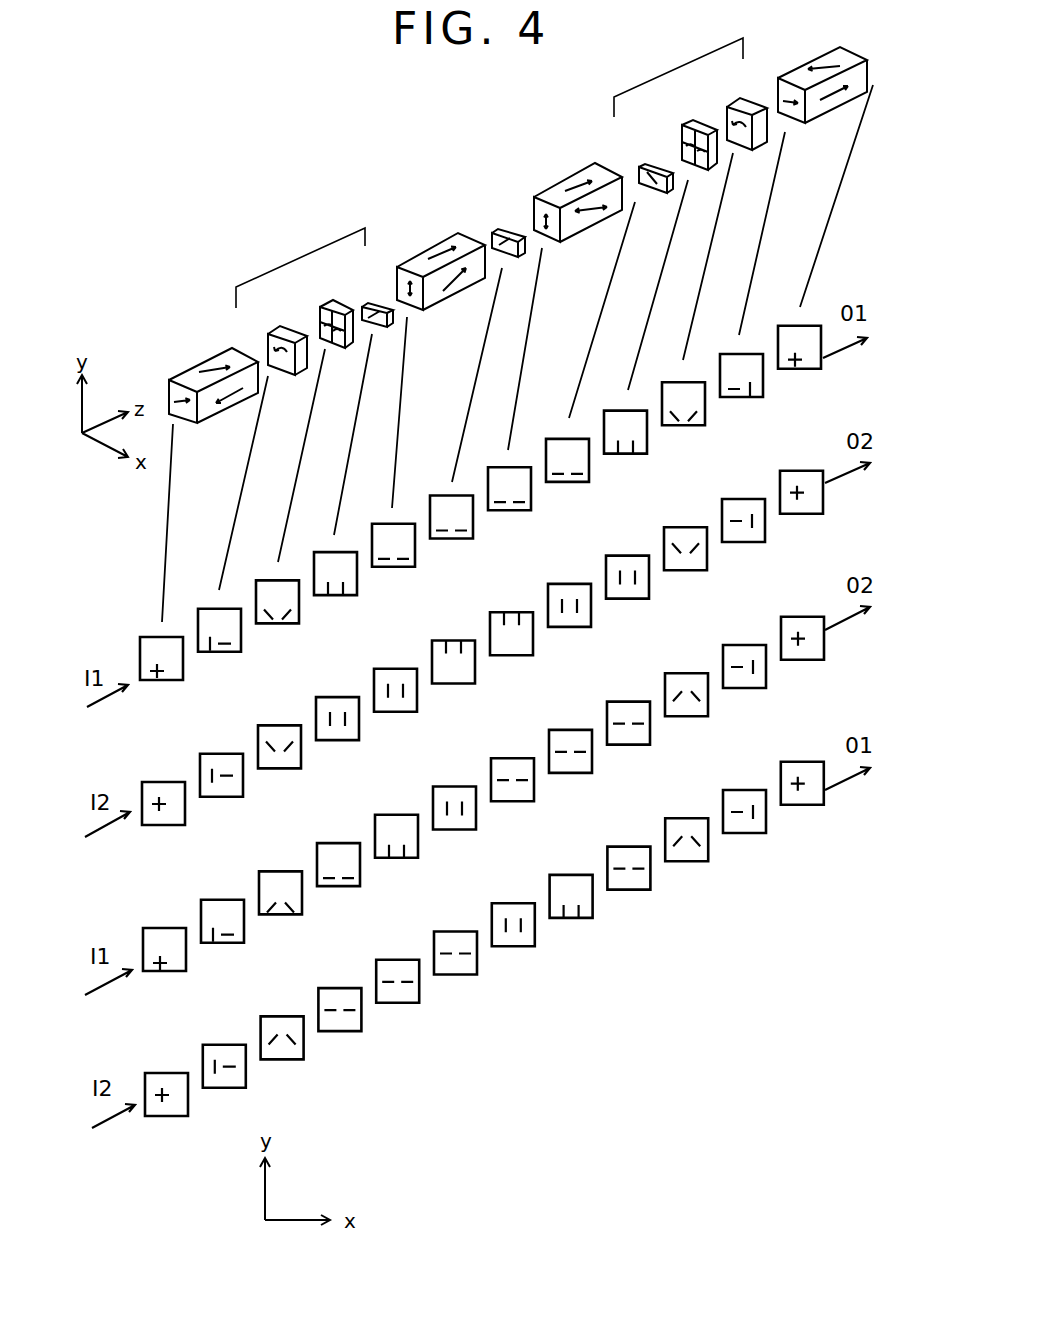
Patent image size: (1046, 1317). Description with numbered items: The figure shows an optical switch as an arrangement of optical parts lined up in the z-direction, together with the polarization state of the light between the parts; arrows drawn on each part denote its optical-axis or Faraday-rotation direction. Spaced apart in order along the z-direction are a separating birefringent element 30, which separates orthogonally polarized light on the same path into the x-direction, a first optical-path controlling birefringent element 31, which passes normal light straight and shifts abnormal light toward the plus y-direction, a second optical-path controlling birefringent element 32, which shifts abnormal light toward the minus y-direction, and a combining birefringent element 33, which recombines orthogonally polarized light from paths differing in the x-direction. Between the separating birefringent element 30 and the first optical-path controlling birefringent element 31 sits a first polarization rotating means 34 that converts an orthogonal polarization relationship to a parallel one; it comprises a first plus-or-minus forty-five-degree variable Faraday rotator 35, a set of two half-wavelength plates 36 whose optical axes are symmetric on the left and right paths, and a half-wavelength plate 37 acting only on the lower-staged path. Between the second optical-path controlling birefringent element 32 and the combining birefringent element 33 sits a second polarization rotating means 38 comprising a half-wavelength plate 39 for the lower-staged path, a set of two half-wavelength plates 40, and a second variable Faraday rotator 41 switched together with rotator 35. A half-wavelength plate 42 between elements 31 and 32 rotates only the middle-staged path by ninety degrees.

The separating birefringent element 30 is at (213, 357).
The first optical-path controlling birefringent element 31 is at (412, 263).
The second optical-path controlling birefringent element 32 is at (557, 189).
The combining birefringent element 33 is at (815, 61).
The first polarization rotating means 34 is at (314, 298).
The first ±45-degree variable Faraday rotator 35 is at (277, 329).
The set of two ½-wavelength plates 36 is at (320, 318).
The ½-wavelength plate 37 is at (370, 304).
The second polarization rotating means 38 is at (690, 115).
The ½-wavelength plate 39 is at (643, 159).
The set of two ½-wavelength plates 40 is at (690, 126).
The second ±45-degree variable Faraday rotator 41 is at (738, 101).
The ½-wavelength plate 42 is at (500, 231).